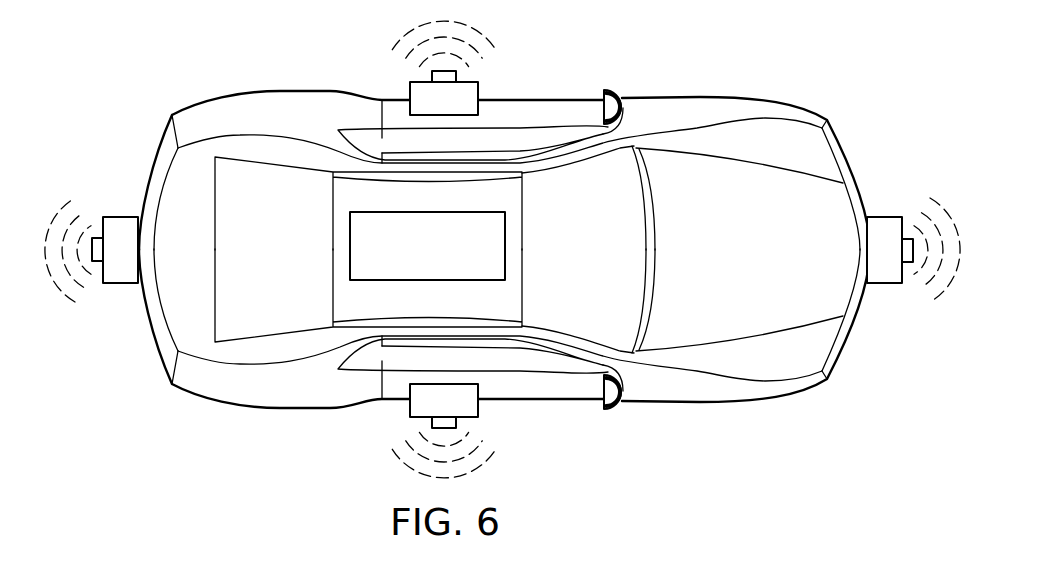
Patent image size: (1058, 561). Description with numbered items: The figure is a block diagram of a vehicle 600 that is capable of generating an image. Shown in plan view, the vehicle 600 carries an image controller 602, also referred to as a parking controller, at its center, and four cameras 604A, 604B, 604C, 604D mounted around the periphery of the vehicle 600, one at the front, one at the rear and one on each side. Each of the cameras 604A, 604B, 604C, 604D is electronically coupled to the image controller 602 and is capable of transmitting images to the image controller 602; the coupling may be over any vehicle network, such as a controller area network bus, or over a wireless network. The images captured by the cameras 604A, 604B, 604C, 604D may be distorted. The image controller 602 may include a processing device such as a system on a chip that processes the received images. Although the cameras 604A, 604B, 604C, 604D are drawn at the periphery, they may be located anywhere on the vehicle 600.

The vehicle 600 is at (712, 90).
The image controller 602 is at (348, 242).
The camera 604A is at (882, 216).
The camera 604B is at (408, 403).
The camera 604C is at (120, 216).
The camera 604D is at (408, 97).